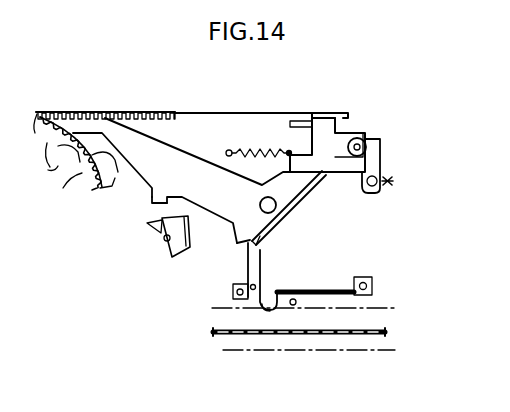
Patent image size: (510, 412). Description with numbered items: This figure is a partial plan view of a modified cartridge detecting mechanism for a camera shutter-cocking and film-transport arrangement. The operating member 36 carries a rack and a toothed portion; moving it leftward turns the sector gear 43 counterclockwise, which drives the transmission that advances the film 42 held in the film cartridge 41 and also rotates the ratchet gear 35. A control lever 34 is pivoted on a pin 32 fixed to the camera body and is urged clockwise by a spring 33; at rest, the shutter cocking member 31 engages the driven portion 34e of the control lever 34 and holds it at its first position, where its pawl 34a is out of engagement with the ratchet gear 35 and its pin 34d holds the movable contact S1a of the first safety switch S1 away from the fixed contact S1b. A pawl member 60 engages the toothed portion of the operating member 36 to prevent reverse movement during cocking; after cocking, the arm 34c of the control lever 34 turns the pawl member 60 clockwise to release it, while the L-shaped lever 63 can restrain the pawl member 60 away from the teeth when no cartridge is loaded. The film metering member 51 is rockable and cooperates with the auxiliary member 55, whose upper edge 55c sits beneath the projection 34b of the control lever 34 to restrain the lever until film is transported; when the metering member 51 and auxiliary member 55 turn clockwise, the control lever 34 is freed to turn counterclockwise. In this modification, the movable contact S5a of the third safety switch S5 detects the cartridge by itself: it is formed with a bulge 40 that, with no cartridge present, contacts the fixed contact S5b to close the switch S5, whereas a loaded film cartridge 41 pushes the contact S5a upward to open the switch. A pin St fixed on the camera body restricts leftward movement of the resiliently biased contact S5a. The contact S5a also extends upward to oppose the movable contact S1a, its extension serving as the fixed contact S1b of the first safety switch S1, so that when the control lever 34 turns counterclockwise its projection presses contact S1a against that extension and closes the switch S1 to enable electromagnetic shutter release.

The operating member 36 is at (140, 113).
The control lever 34 is at (157, 165).
The pawl 34a is at (75, 131).
The ratchet gear 35 is at (80, 178).
The sector gear 43 is at (117, 176).
The projection of control lever 34b is at (152, 203).
The upper edge of auxiliary member 55c is at (192, 197).
The pin 34d is at (238, 247).
The spring 33 is at (258, 147).
The shutter cocking member 31 is at (292, 121).
The driven portion of control lever 34e is at (322, 126).
The pawl member 60 is at (361, 138).
The arm of control lever 34c is at (372, 162).
The L-shaped lever 63 is at (378, 193).
The pin 32 is at (271, 207).
The first safety switch S1 is at (270, 238).
The fixed contact of first safety switch S1b is at (261, 268).
The movable contact of first safety switch S1a is at (247, 288).
The film 42 is at (236, 303).
The third safety switch S5 is at (303, 301).
The movable contact of third safety switch S5a is at (317, 294).
The fixed contact of third safety switch S5b is at (292, 306).
The bulge 40 is at (265, 312).
The pin St is at (253, 309).
The film cartridge 41 is at (352, 312).
The auxiliary member 55 is at (190, 234).
The film metering member 51 is at (163, 239).